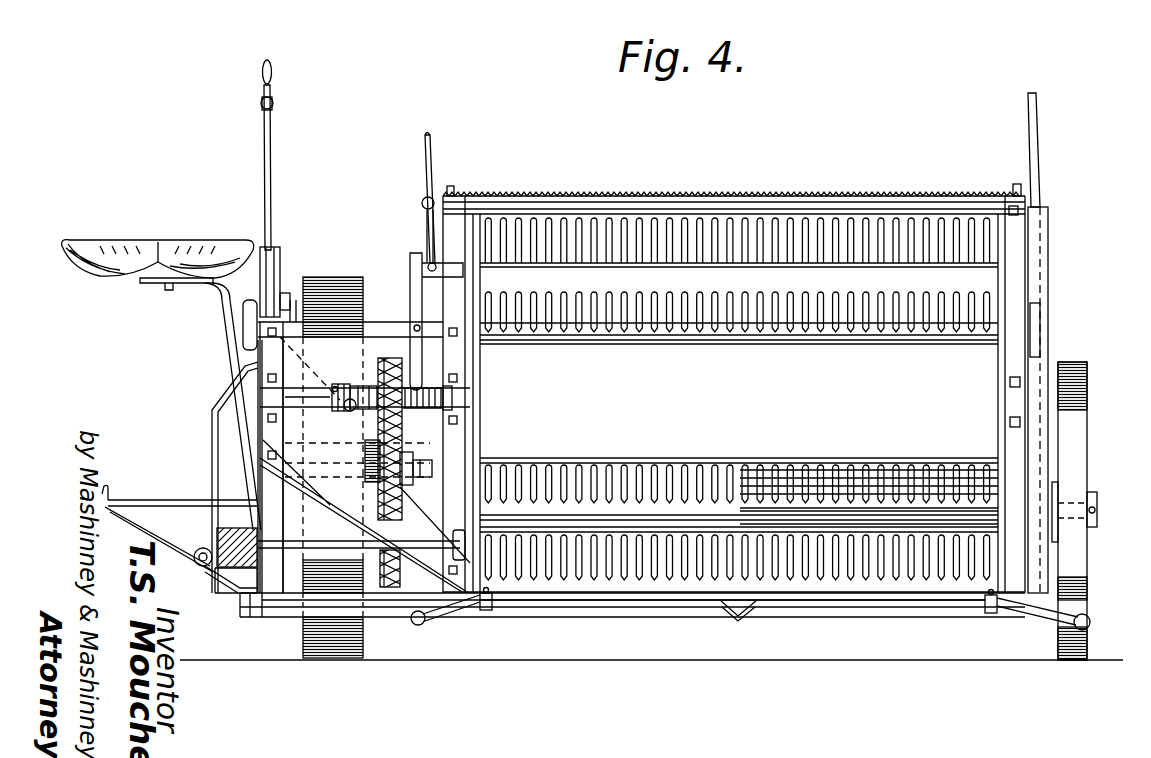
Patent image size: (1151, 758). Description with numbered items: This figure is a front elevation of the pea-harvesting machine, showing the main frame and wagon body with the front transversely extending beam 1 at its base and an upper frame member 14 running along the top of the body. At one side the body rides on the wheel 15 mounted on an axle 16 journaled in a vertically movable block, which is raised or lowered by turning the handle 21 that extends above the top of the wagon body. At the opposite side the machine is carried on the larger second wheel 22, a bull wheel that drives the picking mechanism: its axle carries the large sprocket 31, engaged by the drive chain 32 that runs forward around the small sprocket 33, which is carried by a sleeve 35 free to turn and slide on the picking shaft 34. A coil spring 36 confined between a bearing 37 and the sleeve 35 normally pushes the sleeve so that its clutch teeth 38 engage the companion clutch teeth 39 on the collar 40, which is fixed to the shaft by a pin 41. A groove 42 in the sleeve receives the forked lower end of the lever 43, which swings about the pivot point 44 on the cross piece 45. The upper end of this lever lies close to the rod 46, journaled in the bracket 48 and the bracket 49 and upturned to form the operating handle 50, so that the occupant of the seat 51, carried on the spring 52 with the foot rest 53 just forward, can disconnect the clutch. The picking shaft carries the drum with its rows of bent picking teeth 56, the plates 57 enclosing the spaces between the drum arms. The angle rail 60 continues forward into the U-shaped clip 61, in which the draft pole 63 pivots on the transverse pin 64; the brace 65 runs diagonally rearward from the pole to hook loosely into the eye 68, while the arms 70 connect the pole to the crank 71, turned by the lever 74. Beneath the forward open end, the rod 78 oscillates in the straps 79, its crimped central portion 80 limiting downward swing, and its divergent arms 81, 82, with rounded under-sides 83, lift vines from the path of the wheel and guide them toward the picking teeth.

The front transversely extending beam 1 is at (500, 610).
The top rail 14 is at (862, 194).
The wheel 15 is at (1075, 662).
The axle 16 is at (1098, 503).
The handle 21 is at (1038, 122).
The second wheel 22 is at (325, 285).
The large sprocket 31 is at (392, 590).
The drive chain 32 is at (380, 495).
The small sprocket 33 is at (392, 358).
The picking shaft 34 is at (255, 392).
The sleeve 35 is at (367, 386).
The coil spring 36 is at (438, 380).
The bearing 37 is at (462, 378).
The clutch teeth 38 is at (350, 410).
The companion clutch teeth 39 is at (365, 462).
The collar 40 is at (345, 384).
The pin 41 is at (335, 385).
The groove 42 is at (415, 428).
The lever 43 is at (410, 255).
The pivot point 44 is at (415, 325).
The cross piece 45 is at (293, 322).
The rod 46 is at (428, 225).
The bracket 48 is at (428, 262).
The bracket 49 is at (424, 200).
The operating handle 50 is at (433, 145).
The seat 51 is at (140, 240).
The spring 52 is at (225, 305).
The foot rest or stirrup 53 is at (140, 500).
The picking teeth 56 is at (781, 323).
The plates 57 is at (815, 418).
The angle rail 60 is at (258, 603).
The U-shaped clip 61 is at (218, 597).
The draft pole 63 is at (212, 575).
The transverse pin 64 is at (207, 562).
The brace 65 is at (320, 565).
The eye 68 is at (460, 545).
The arms 70 is at (257, 413).
The crank 71 is at (243, 330).
The lever 74 is at (272, 148).
The rod 78 is at (615, 608).
The straps 79 is at (985, 612).
The crimped central portion 80 is at (738, 621).
The divergent arm 81 is at (450, 612).
The divergent arm 82 is at (1040, 625).
The rounded under-sides 83 is at (418, 627).